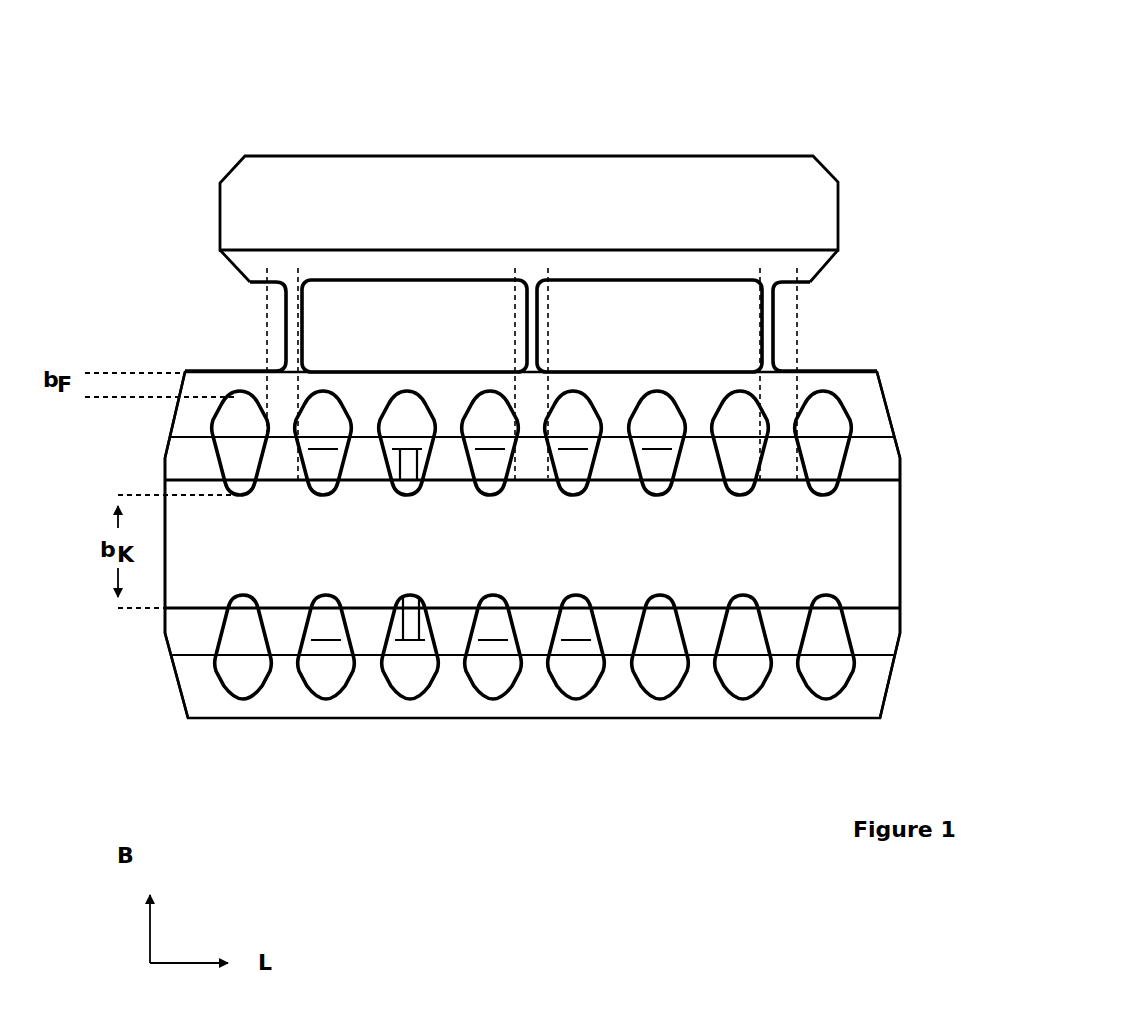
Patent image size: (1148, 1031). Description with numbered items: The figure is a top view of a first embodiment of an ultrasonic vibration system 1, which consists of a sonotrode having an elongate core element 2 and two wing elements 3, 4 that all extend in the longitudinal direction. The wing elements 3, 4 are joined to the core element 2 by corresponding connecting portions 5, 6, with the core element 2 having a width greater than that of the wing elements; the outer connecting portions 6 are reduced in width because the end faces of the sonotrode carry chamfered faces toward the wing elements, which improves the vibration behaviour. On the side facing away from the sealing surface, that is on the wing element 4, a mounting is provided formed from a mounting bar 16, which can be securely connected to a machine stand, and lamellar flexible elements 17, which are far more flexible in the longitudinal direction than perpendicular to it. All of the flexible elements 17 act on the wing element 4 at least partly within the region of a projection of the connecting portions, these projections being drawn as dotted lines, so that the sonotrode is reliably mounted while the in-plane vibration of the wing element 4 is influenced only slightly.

The ultrasonic vibration system 1 is at (897, 220).
The core element 2 is at (870, 533).
The wing element 3 is at (188, 718).
The wing element 4 is at (212, 395).
The connecting portion 5 is at (772, 452).
The outer connecting portion 6 is at (185, 628).
The mounting bar 16 is at (303, 185).
The flexible element 17 is at (288, 322).